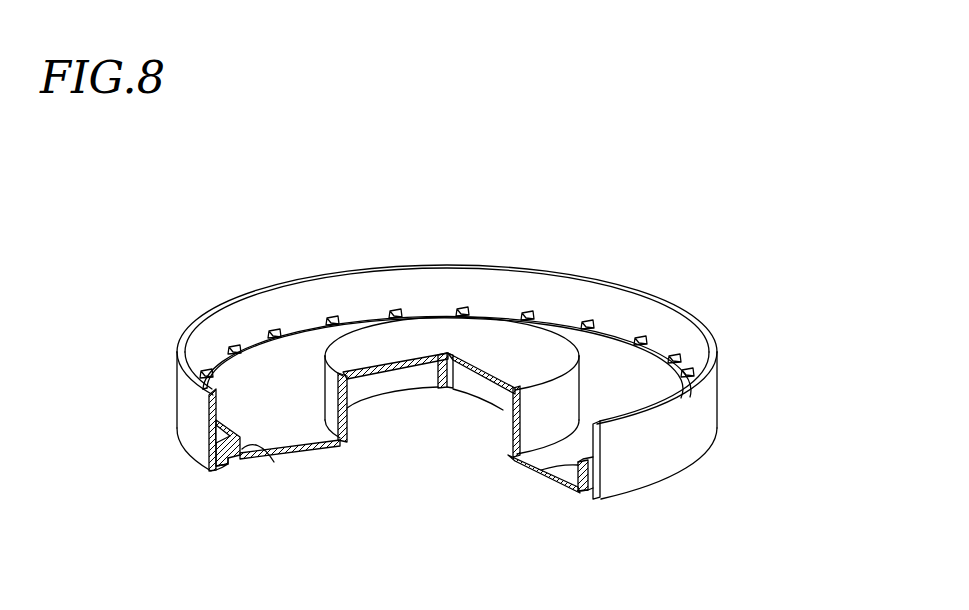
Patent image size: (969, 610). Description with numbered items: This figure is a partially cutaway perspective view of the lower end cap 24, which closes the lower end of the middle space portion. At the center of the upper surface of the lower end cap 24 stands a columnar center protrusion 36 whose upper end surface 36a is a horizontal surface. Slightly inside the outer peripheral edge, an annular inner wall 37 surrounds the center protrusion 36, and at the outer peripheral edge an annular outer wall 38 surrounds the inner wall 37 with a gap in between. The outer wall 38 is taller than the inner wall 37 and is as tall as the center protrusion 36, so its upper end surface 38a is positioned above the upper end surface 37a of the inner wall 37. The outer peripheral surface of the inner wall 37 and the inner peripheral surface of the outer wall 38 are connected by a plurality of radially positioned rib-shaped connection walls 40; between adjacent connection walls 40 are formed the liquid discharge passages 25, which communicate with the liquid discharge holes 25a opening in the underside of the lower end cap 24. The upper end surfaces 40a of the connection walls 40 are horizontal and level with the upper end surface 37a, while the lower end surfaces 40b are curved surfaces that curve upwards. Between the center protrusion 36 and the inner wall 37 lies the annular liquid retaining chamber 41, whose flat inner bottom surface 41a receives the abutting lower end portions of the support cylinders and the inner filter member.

The lower end cap 24 is at (579, 198).
The liquid discharge passage 25 is at (568, 480).
The liquid discharge hole 25a is at (590, 497).
The center protrusion 36 is at (541, 418).
The upper end surface of the center protrusion 36a is at (471, 346).
The inner wall 37 is at (541, 470).
The upper end surface of the inner wall 37a is at (603, 337).
The outer wall 38 is at (657, 462).
The upper end surface of the outer wall 38a is at (693, 318).
The connection wall 40 is at (271, 336).
The upper end surface of the connection wall 40a is at (214, 420).
The lower end surface of the connection wall 40b is at (224, 468).
The liquid retaining chamber 41 is at (259, 457).
The inner bottom surface of the liquid retaining chamber 41a is at (289, 417).